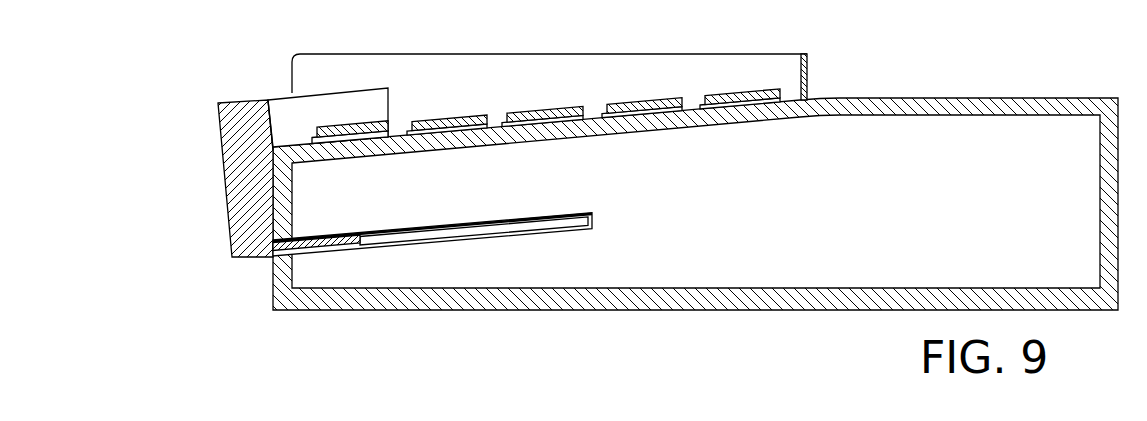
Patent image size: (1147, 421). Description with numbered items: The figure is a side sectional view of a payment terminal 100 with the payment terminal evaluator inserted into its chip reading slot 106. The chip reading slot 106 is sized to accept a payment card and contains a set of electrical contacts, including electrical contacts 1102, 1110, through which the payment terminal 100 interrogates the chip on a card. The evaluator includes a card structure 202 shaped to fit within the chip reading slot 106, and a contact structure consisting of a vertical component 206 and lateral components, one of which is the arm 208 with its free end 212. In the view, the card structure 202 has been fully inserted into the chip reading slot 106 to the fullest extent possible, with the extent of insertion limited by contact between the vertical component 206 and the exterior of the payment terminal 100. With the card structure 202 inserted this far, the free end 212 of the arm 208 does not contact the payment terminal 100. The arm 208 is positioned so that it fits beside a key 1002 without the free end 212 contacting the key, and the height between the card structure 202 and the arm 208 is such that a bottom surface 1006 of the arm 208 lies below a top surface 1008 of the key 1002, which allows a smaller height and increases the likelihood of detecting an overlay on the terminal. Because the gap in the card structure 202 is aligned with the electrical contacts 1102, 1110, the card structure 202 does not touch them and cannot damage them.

The payment terminal 100 is at (1073, 98).
The chip reading slot 106 is at (326, 242).
The card structure 202 is at (345, 237).
The vertical component 206 is at (250, 163).
The lateral component 208 is at (353, 107).
The free end 212 is at (392, 122).
The key 1002 is at (393, 126).
The bottom surface 1006 is at (290, 144).
The top surface 1008 is at (376, 104).
The electrical contact 1102 is at (553, 222).
The electrical contact 1110 is at (523, 220).